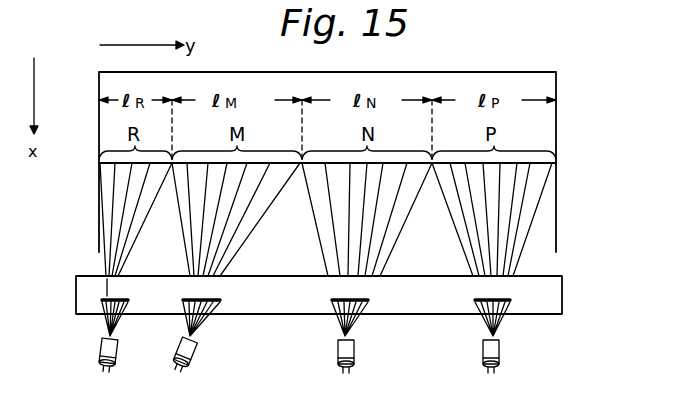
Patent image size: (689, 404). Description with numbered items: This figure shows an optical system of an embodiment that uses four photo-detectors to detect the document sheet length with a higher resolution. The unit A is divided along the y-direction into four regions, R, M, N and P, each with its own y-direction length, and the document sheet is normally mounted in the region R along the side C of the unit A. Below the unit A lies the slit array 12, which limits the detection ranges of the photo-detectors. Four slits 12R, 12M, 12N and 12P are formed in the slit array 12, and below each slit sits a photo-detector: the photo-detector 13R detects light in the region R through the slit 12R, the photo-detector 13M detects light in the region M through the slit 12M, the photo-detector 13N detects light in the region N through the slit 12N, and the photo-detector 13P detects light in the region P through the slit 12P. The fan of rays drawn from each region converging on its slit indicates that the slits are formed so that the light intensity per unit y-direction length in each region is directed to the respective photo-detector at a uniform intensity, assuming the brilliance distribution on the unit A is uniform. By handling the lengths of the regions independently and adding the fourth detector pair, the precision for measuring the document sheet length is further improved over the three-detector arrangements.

The slit array 12 is at (76, 306).
The slit 12R is at (128, 301).
The slit 12M is at (220, 301).
The slit 12N is at (368, 301).
The slit 12P is at (510, 301).
The photo-detector 13R is at (118, 356).
The photo-detector 13M is at (197, 354).
The photo-detector 13N is at (356, 353).
The photo-detector 13P is at (500, 353).
The unit A is at (556, 122).
The side of the unit C is at (92, 102).